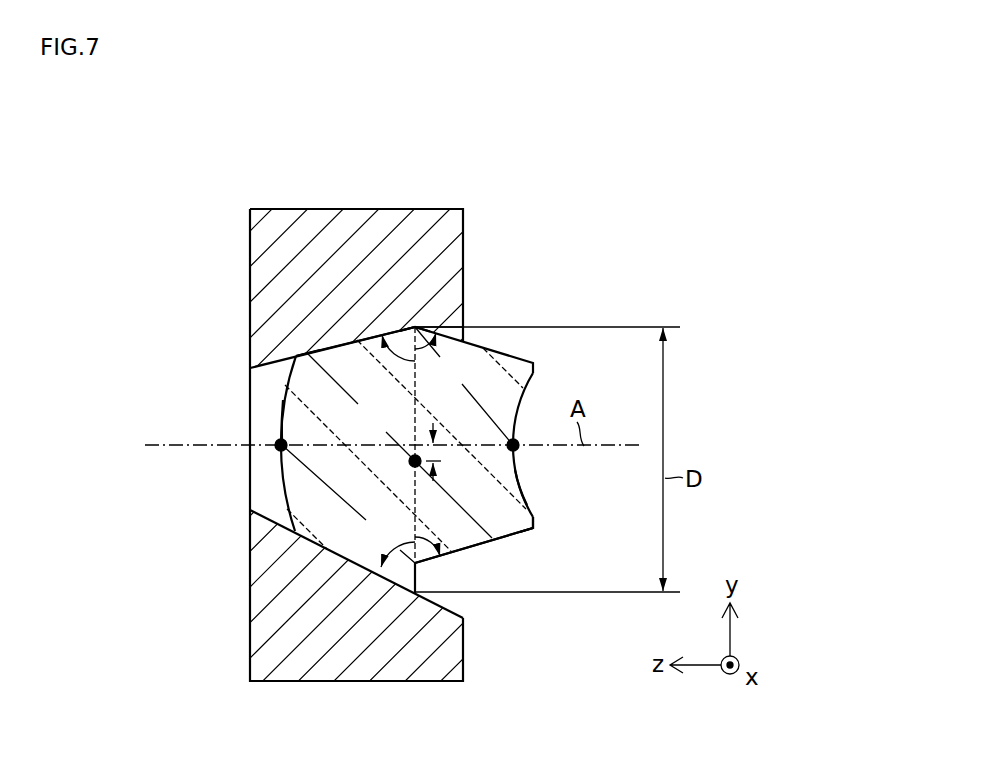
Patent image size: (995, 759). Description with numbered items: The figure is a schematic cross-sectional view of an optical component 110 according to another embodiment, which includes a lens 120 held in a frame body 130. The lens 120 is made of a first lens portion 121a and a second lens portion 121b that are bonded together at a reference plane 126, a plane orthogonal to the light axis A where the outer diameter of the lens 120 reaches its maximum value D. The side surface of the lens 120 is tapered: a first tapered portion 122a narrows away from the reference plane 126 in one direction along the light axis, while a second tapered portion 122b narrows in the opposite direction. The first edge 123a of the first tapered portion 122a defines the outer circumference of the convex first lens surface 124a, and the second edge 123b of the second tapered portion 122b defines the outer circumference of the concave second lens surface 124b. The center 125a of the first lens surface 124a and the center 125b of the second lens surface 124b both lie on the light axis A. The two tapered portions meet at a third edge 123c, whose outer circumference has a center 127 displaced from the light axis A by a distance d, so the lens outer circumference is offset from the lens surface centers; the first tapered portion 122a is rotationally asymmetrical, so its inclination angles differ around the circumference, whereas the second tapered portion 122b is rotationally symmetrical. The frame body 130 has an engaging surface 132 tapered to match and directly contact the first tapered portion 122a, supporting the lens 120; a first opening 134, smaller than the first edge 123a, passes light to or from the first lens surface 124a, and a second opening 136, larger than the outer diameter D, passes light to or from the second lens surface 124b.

The optical component 110 is at (478, 163).
The lens 120 is at (401, 384).
The first lens portion 121a is at (297, 382).
The second lens portion 121b is at (522, 371).
The first tapered portion 122a is at (320, 348).
The second tapered portion 122b is at (510, 537).
The first edge 123a is at (296, 353).
The second edge 123b is at (540, 538).
The third edge 123c is at (415, 319).
The first lens surface 124a is at (282, 420).
The second lens surface 124b is at (525, 500).
The center of the first lens surface 125a is at (282, 447).
The center of the second lens surface 125b is at (513, 446).
The reference plane 126 is at (415, 420).
The center of the outer circumference 127 is at (415, 461).
The frame body 130 is at (357, 200).
The engaging surface 132 is at (338, 551).
The first opening 134 is at (231, 504).
The second opening 136 is at (483, 321).